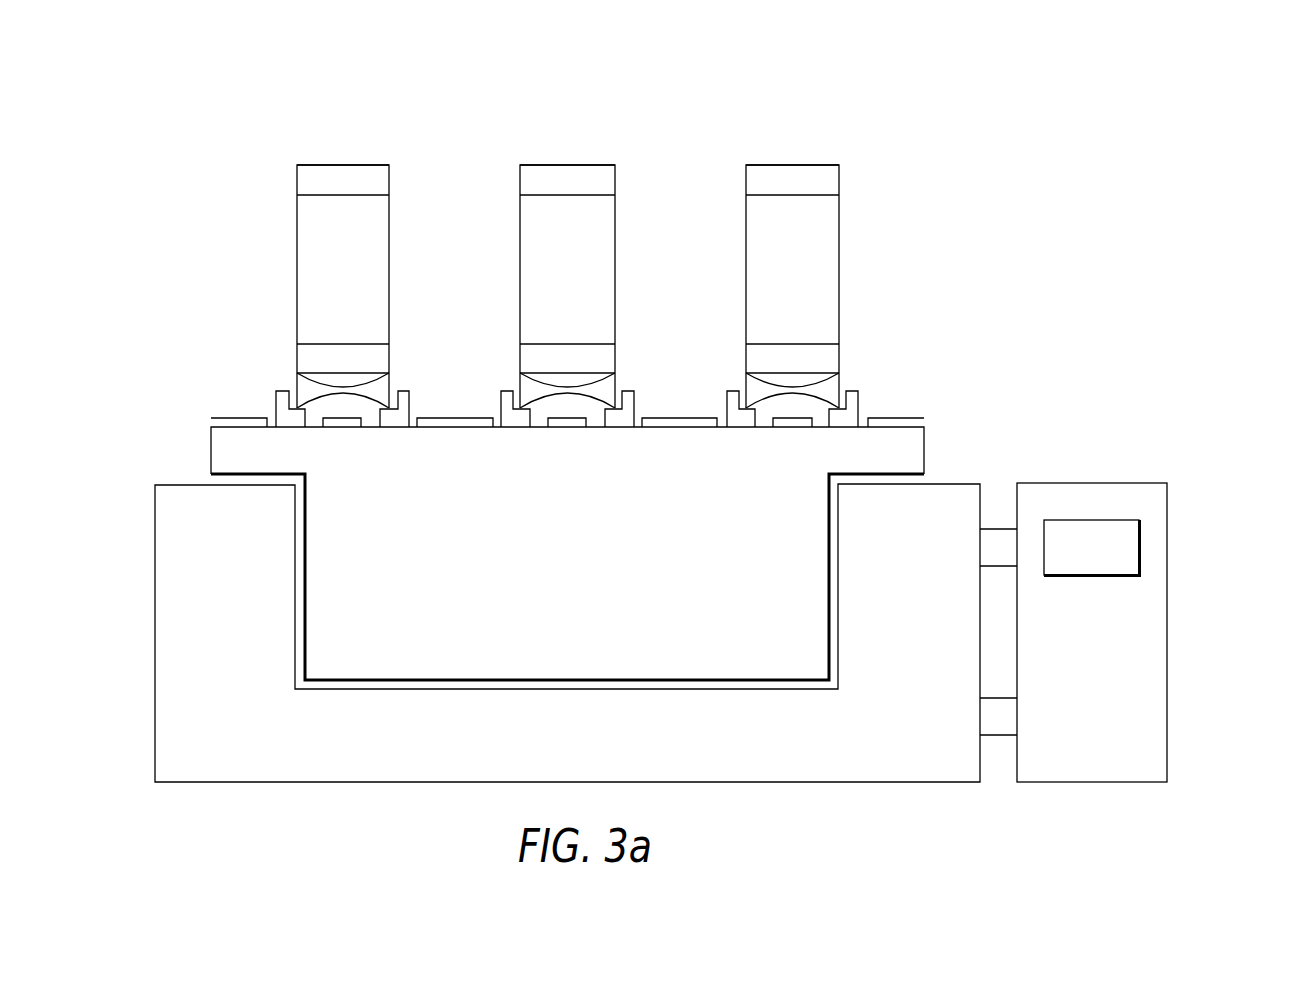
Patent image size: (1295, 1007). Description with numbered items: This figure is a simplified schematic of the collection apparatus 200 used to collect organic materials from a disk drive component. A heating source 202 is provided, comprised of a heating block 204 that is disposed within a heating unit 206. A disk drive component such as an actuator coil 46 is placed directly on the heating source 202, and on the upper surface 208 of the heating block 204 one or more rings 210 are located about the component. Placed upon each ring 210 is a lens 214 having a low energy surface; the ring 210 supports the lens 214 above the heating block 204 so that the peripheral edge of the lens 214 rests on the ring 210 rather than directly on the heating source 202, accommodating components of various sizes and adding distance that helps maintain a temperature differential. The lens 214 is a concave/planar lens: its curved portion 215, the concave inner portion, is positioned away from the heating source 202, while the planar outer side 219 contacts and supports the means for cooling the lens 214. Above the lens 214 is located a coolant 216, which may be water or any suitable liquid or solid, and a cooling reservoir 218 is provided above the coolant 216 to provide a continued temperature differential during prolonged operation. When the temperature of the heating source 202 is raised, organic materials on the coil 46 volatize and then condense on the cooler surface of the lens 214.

The collection apparatus 200 is at (879, 132).
The heating source 202 is at (1185, 416).
The heating block 204 is at (211, 458).
The heating unit 206 is at (1092, 482).
The upper surface 208 is at (217, 399).
The ring 210 is at (429, 386).
The lens 214 is at (520, 380).
The curved portion 215 is at (785, 395).
The coolant 216 is at (823, 267).
The cooling reservoir 218 is at (312, 136).
The planar outer side 219 is at (340, 387).
The actuator coil 46 is at (321, 396).